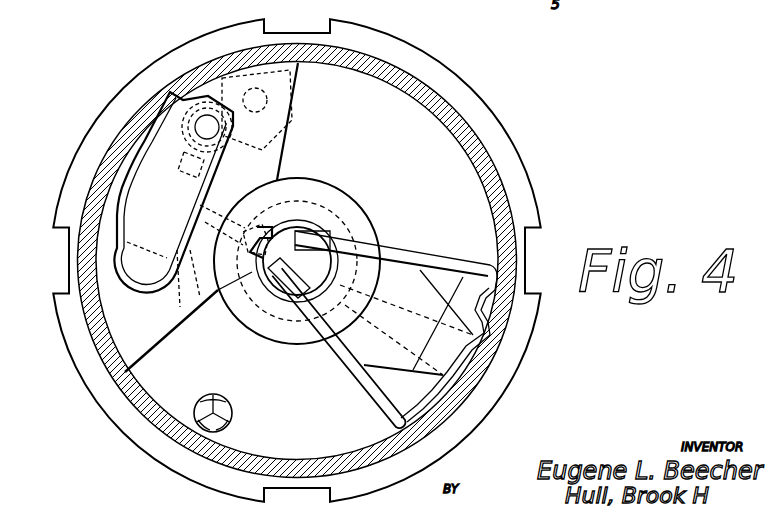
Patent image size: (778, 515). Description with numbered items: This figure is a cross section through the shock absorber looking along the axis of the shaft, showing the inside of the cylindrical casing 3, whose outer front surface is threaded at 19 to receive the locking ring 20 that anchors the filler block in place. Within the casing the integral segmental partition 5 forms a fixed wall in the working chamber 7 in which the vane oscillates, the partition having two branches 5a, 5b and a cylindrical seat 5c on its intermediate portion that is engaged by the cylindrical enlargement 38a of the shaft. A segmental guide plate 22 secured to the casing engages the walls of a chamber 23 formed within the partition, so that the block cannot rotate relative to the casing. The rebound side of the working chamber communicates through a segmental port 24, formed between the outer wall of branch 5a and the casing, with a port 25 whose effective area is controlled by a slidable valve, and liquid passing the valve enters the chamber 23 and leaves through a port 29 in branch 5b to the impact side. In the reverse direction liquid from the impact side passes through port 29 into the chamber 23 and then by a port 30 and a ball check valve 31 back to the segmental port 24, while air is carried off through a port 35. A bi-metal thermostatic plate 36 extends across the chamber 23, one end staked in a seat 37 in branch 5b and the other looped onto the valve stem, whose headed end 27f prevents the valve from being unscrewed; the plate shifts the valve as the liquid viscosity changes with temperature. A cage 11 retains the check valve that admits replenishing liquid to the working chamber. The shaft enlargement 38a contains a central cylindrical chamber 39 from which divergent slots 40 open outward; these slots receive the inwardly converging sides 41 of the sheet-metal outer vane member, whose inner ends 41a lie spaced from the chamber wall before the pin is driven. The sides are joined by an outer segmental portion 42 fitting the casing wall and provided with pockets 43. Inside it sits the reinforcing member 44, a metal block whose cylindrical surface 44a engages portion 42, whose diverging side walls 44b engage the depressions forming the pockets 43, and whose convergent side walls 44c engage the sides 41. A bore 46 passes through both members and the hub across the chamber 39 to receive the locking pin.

The cylindrical casing 3 is at (433, 91).
The segmental partition 5 is at (238, 181).
The branch of the partition 5a is at (297, 115).
The branch of the partition 5b is at (153, 334).
The cylindrical seat 5c is at (200, 250).
The working chamber 7 is at (361, 300).
The cage 11 is at (233, 413).
The threads 19 is at (215, 394).
The locking ring 20 is at (513, 145).
The segmental guide plate 22 is at (138, 154).
The chamber 23 is at (134, 192).
The segmental port 24 is at (286, 62).
The port 25 is at (184, 100).
The headed end of valve stem 27f is at (185, 110).
The port 29 is at (173, 308).
The port 30 is at (280, 165).
The ball check valve 31 is at (290, 82).
The port 35 is at (190, 168).
The bi-metal thermostatic plate 36 is at (173, 192).
The seat 37 is at (138, 283).
The cylindrical enlargement of the shaft 38a is at (344, 197).
The chamber 39 is at (307, 228).
The divergent slots 40 is at (298, 305).
The sides of the outer vane member 41 is at (430, 257).
The inner ends of the sides 41a is at (277, 290).
The outer segmental portion 42 is at (472, 350).
The pockets 43 is at (487, 313).
The inner strengthening and reinforcing member 44 is at (393, 272).
The cylindrical surface 44a is at (452, 372).
The inwardly diverging side walls 44b is at (406, 330).
The inwardly convergent side walls 44c is at (397, 317).
The bore 46 is at (484, 316).